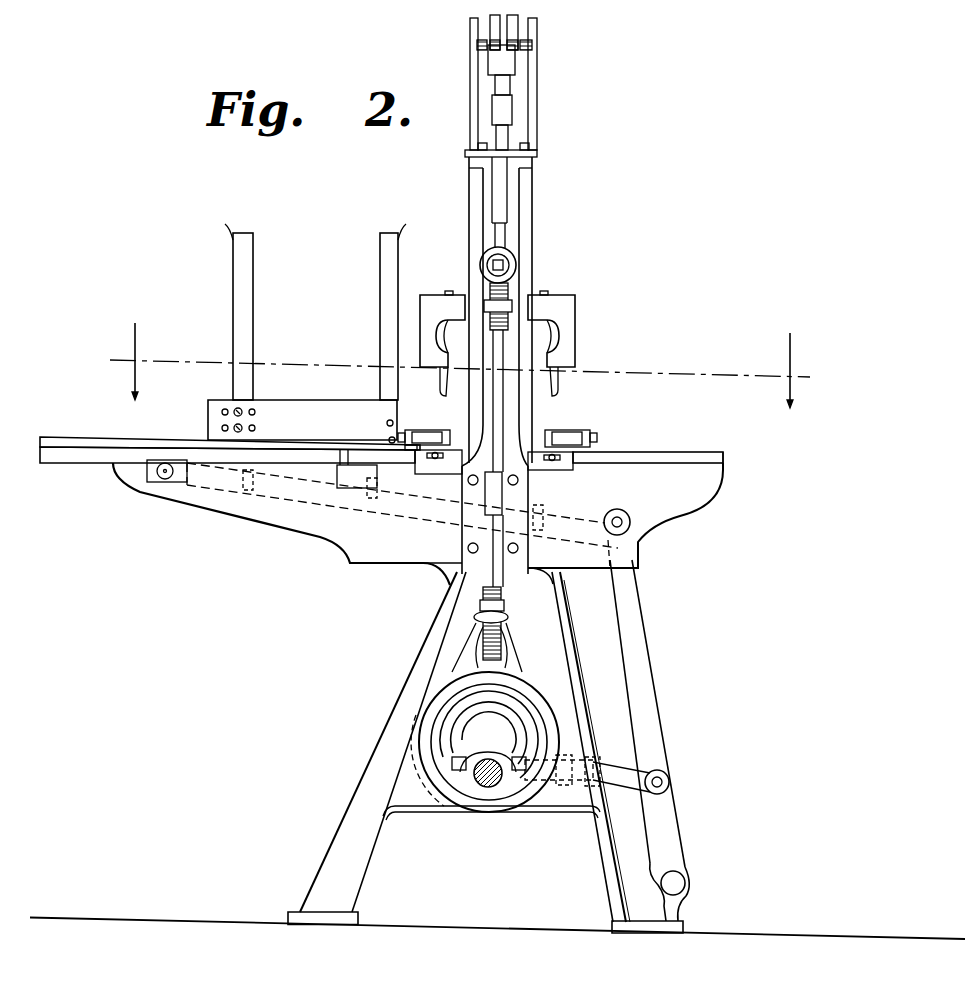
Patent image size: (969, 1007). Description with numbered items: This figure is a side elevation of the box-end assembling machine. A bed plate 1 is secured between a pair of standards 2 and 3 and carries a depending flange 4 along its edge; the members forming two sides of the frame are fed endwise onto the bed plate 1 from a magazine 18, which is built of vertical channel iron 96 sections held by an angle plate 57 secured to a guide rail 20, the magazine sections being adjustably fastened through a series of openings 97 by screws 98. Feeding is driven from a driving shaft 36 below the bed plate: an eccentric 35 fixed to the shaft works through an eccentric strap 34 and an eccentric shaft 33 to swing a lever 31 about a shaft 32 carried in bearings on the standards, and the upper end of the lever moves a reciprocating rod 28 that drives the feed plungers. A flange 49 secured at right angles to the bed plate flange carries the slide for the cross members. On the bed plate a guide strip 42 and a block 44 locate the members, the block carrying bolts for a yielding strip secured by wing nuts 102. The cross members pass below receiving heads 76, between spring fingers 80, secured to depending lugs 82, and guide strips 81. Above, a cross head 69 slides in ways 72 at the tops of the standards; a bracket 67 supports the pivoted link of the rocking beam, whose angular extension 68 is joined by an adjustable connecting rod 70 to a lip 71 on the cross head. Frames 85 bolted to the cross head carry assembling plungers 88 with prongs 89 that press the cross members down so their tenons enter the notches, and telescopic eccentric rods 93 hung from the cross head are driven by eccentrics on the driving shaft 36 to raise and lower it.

The bed plate 1 is at (642, 465).
The standard 2 is at (408, 711).
The standard 3 is at (455, 365).
The depending flange 4 is at (382, 550).
The magazine 18 is at (254, 306).
The guide rail 20 is at (93, 448).
The reciprocating rod 28 is at (297, 495).
The lever 31 is at (649, 700).
The shaft 32 is at (675, 882).
The eccentric shaft 33 is at (633, 763).
The eccentric strap 34 is at (510, 717).
The eccentric 35 is at (471, 713).
The driving shaft 36 is at (487, 788).
The guide strip 42 is at (681, 462).
The block 44 is at (438, 476).
The flange 49 is at (440, 688).
The angle plate 57 is at (303, 414).
The bracket 67 is at (534, 127).
The angular extension 68 is at (502, 32).
The cross head 69 is at (503, 243).
The adjustable connecting rod 70 is at (514, 69).
The lip 71 is at (502, 236).
The ways 72 is at (500, 203).
The receiving head 76 is at (436, 425).
The spring finger 80 is at (407, 441).
The guide strip 81 is at (533, 463).
The depending lug 82 is at (401, 434).
The frame 85 is at (557, 310).
The assembling plunger 88 is at (566, 348).
The prong 89 is at (442, 385).
The eccentric rod 93 is at (502, 412).
The channel iron 96 is at (234, 289).
The opening 97 is at (228, 410).
The screw 98 is at (238, 409).
The wing nut 102 is at (562, 461).